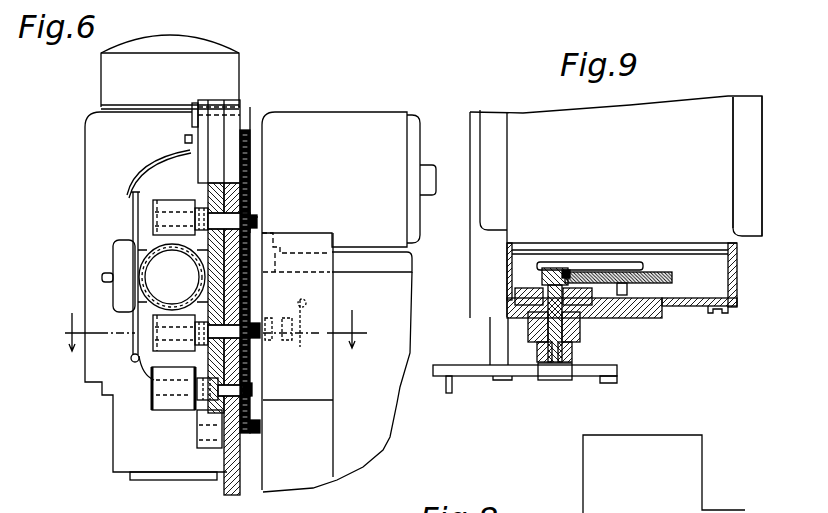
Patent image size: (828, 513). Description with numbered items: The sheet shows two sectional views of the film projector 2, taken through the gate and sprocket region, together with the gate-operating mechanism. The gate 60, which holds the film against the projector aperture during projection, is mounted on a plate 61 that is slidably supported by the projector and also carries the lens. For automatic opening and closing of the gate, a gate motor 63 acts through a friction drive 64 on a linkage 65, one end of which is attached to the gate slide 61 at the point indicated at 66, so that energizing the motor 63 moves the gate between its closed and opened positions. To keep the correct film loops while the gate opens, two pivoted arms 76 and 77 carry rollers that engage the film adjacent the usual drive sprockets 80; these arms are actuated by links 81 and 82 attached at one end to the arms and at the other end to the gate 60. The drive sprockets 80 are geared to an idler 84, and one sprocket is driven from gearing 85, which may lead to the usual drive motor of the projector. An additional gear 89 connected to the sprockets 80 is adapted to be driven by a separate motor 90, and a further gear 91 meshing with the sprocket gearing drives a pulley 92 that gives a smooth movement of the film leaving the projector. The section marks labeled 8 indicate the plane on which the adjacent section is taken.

In FIG. 6, the film projector 2 is at (93, 171).
In FIG. 6, the section line 8- 8 is at (213, 324).
In FIG. 6, the gate 60 is at (133, 222).
In FIG. 6, the plate 61 is at (253, 230).
In FIG. 9, the gate motor 63 is at (717, 157).
In FIG. 9, the friction drive 64 is at (680, 269).
In FIG. 9, the linkage 65 is at (555, 369).
In FIG. 9, the attachment point 66 is at (448, 390).
In FIG. 6, the pivoted arm 76 is at (190, 132).
In FIG. 6, the pivoted arm 77 is at (205, 418).
In FIG. 6, the drive sprockets 80 is at (168, 208).
In FIG. 6, the link 81 is at (149, 172).
In FIG. 6, the link 82 is at (131, 359).
In FIG. 6, the idler 84 is at (245, 305).
In FIG. 6, the gearing 85 is at (251, 340).
In FIG. 6, the additional gear 89 is at (246, 130).
In FIG. 6, the motor 90 is at (318, 120).
In FIG. 6, the gear 91 is at (251, 427).
In FIG. 6, the pulley 92 is at (171, 404).